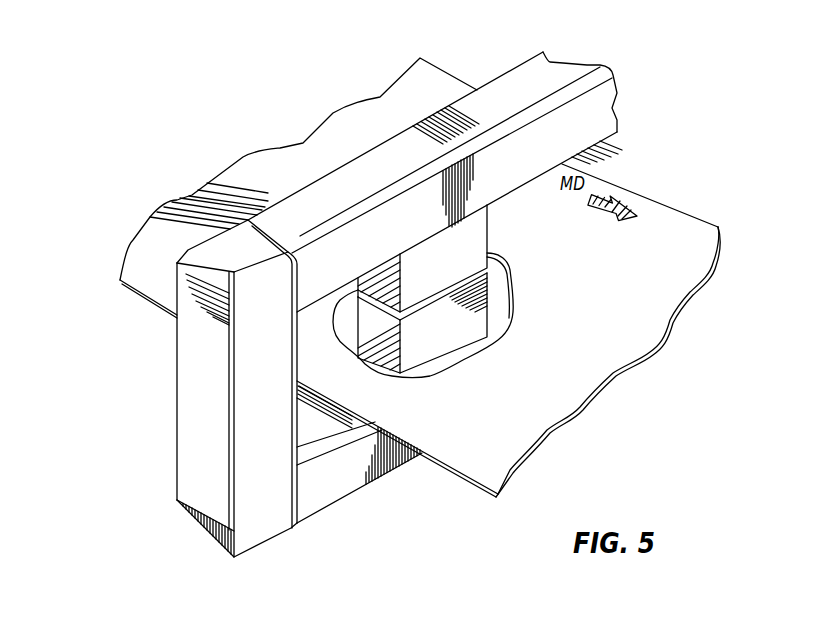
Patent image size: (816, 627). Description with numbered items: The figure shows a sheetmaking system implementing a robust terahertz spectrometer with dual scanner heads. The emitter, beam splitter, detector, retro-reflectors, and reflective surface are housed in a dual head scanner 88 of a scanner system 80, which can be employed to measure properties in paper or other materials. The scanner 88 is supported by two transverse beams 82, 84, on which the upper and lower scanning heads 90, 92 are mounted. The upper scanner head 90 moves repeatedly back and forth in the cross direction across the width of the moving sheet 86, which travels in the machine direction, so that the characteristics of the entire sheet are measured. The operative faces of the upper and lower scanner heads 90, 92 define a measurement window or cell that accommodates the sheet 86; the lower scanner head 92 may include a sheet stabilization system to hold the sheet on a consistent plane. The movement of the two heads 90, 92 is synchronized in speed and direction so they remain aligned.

The scanner system 80 is at (150, 421).
The transverse beam 82 is at (565, 75).
The transverse beam 84 is at (318, 500).
The moving sheet 86 is at (491, 423).
The dual head scanner 88 is at (475, 281).
The upper scanner head 90 is at (457, 243).
The lower scanner head 92 is at (472, 338).